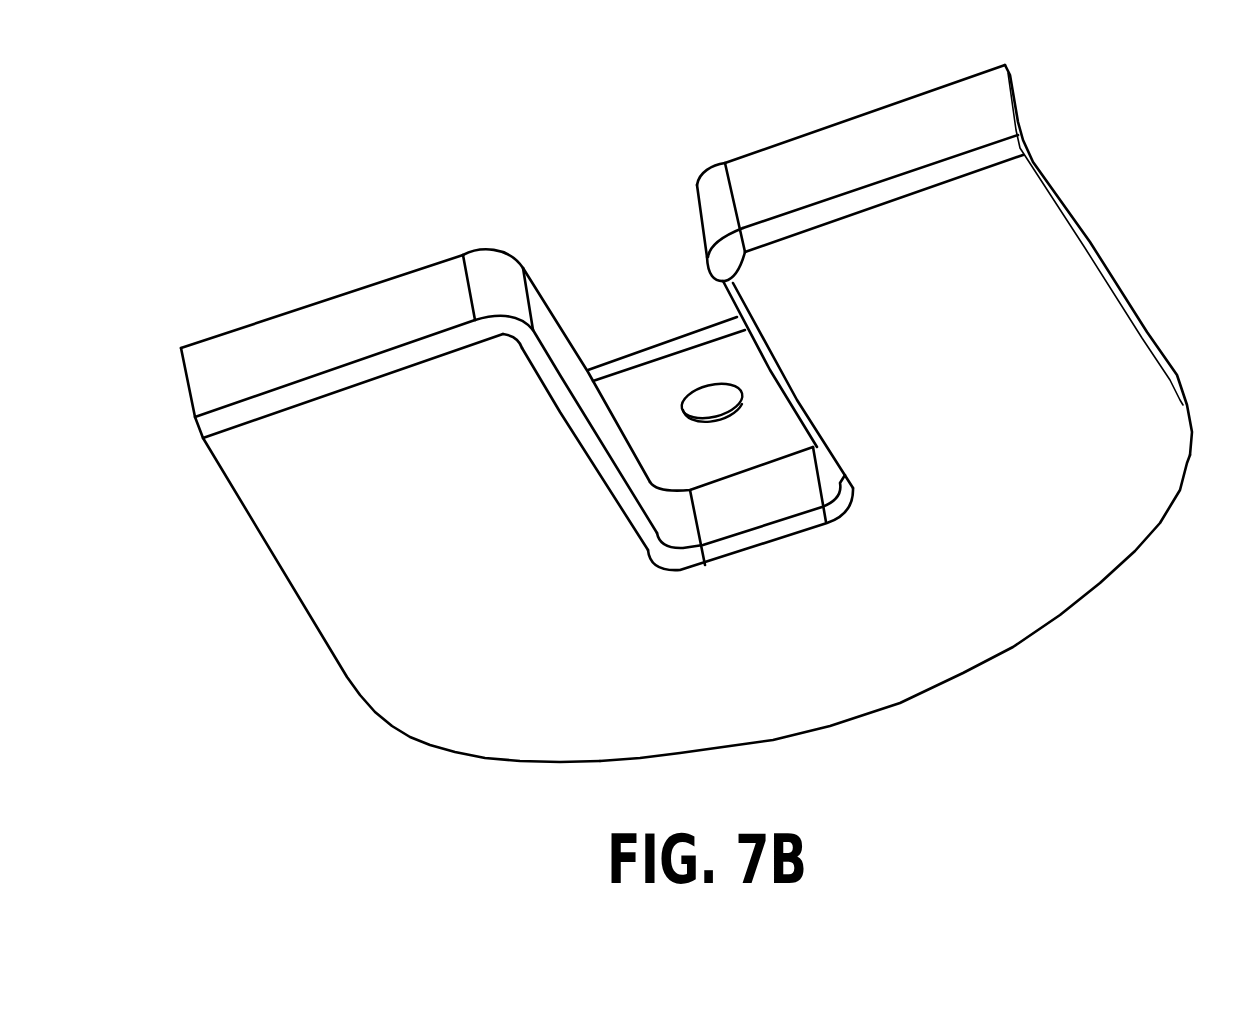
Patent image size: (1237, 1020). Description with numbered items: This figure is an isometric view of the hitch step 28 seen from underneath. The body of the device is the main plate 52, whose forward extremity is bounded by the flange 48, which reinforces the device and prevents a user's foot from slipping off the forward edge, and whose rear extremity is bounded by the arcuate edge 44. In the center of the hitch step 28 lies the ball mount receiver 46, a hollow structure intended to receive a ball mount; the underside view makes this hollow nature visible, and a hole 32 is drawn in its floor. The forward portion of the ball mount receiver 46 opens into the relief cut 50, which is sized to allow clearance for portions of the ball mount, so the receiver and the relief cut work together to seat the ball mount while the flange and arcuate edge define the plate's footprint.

The hitch step 28 is at (390, 593).
The hole 32 is at (648, 449).
The arcuate edge 44 is at (895, 610).
The ball mount receiver 46 is at (739, 443).
The flange 48 is at (602, 247).
The relief cut 50 is at (687, 373).
The main plate 52 is at (1114, 352).